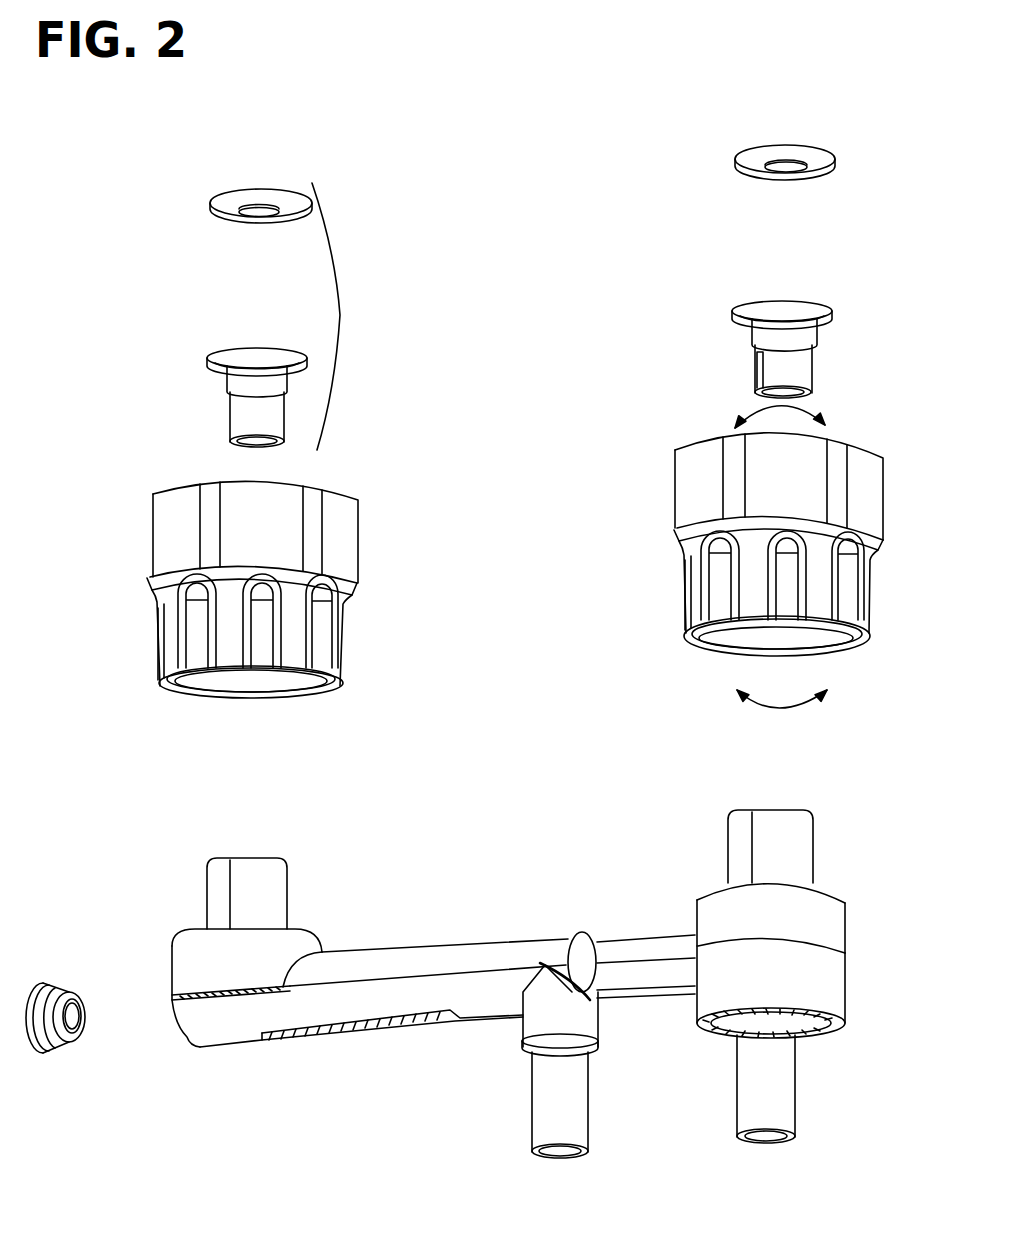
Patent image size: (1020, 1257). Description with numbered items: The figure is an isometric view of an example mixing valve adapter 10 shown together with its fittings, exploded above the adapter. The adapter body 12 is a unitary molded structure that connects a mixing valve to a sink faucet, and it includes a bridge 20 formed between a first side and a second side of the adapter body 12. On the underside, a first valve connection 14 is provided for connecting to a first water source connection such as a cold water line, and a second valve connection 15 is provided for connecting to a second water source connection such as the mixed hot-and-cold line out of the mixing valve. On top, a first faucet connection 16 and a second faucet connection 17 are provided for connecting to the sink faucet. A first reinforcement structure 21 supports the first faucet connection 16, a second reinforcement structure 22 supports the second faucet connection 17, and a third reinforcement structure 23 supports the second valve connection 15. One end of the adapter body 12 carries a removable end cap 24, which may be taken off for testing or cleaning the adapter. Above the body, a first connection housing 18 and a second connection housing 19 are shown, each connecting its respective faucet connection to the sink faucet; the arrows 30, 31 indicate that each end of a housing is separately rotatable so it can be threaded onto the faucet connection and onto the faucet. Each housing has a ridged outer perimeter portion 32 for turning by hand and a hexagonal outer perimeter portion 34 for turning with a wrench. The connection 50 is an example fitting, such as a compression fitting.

The mixing valve adapter 10 is at (553, 228).
The adapter body 12 is at (384, 1002).
The first valve connection 14 is at (532, 1118).
The second valve connection 15 is at (735, 1105).
The first faucet connection 16 is at (203, 890).
The second faucet connection 17 is at (727, 853).
The first connection housing 18 is at (409, 572).
The second connection housing 19 is at (753, 558).
The bridge 20 is at (627, 937).
The first reinforcement structure 21 is at (170, 963).
The second reinforcement structure 22 is at (776, 976).
The third reinforcement structure 23 is at (847, 990).
The removable end cap 24 is at (67, 993).
The arrow 30 is at (793, 708).
The arrow 31 is at (800, 408).
The ridged outer perimeter portion 32 is at (672, 592).
The hexagonal outer perimeter portion 34 is at (672, 507).
The connection 50 is at (351, 313).